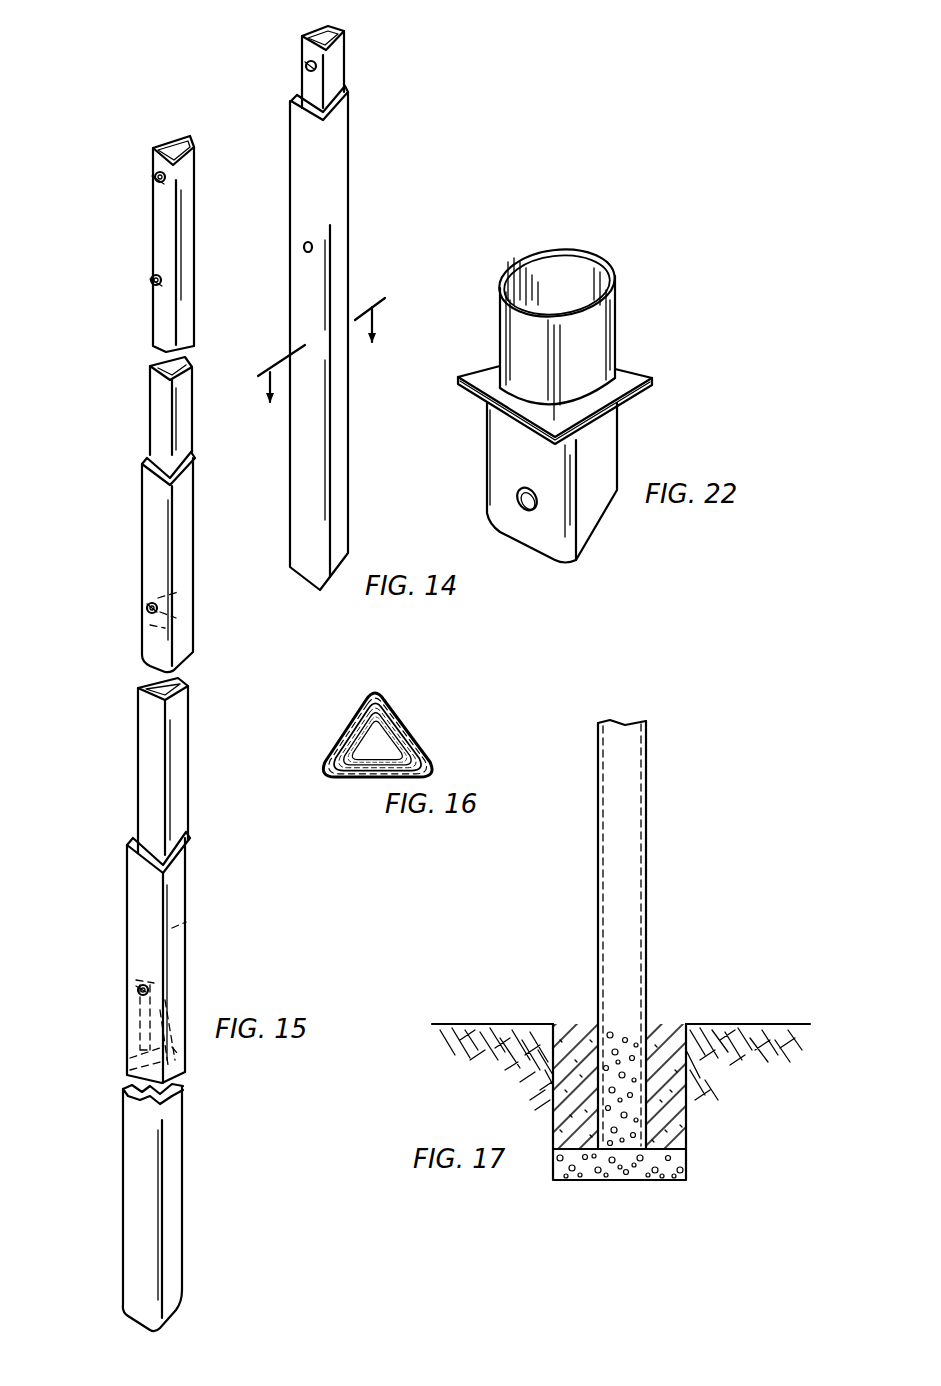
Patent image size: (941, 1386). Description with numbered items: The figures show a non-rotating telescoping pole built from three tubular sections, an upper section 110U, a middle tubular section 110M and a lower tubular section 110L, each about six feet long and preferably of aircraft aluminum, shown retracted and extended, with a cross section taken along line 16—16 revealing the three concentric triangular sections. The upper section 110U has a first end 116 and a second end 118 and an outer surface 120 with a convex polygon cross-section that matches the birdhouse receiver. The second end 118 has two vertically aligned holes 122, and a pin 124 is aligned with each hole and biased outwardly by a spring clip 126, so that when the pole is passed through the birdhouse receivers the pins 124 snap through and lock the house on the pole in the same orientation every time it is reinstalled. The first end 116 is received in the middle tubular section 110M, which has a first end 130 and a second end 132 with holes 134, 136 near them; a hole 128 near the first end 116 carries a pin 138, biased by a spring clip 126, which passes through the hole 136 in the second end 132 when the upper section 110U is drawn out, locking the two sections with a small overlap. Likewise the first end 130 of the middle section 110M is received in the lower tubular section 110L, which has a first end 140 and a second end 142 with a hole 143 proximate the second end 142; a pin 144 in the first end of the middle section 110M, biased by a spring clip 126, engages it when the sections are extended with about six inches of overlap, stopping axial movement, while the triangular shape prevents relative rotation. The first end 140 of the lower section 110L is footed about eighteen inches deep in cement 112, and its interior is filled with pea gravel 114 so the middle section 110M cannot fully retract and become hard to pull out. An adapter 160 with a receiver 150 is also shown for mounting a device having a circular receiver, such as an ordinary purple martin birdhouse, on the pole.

In FIG. 15, the upper section 110U is at (191, 318).
In FIG. 14, the upper section 110U is at (344, 64).
In FIG. 16, the upper section 110U is at (332, 748).
In FIG. 15, the middle tubular section 110M is at (190, 745).
In FIG. 14, the middle tubular section 110M is at (346, 106).
In FIG. 16, the middle tubular section 110M is at (424, 740).
In FIG. 15, the lower tubular section 110L is at (190, 882).
In FIG. 14, the lower tubular section 110L is at (350, 177).
In FIG. 16, the lower tubular section 110L is at (409, 724).
In FIG. 17, the lower tubular section 110L is at (648, 872).
In FIG. 15, the first end 116 is at (196, 182).
In FIG. 15, the holes 122 is at (162, 278).
In FIG. 15, the pin 124 is at (150, 180).
In FIG. 15, the outer surface 120 is at (158, 400).
In FIG. 15, the second end 118 is at (148, 620).
In FIG. 15, the hole 136 is at (150, 604).
In FIG. 15, the pin 138 is at (147, 609).
In FIG. 15, the hole 128 is at (180, 598).
In FIG. 15, the first end 130 is at (170, 612).
In FIG. 15, the second end 132 is at (172, 930).
In FIG. 15, the second end 142 is at (178, 938).
In FIG. 15, the hole 134 is at (168, 985).
In FIG. 15, the spring clip 126 is at (173, 996).
In FIG. 15, the hole 143 is at (136, 986).
In FIG. 15, the pin 144 is at (140, 995).
In FIG. 15, the first end 140 is at (184, 1216).
In FIG. 17, the first end 140 is at (646, 914).
In FIG. 14, the tier 16 is at (321, 335).
In FIG. 22, the adapter 160 is at (634, 355).
In FIG. 22, the receiver 150 is at (620, 452).
In FIG. 17, the cement 112 is at (664, 1030).
In FIG. 17, the pea gravel 114 is at (620, 1030).